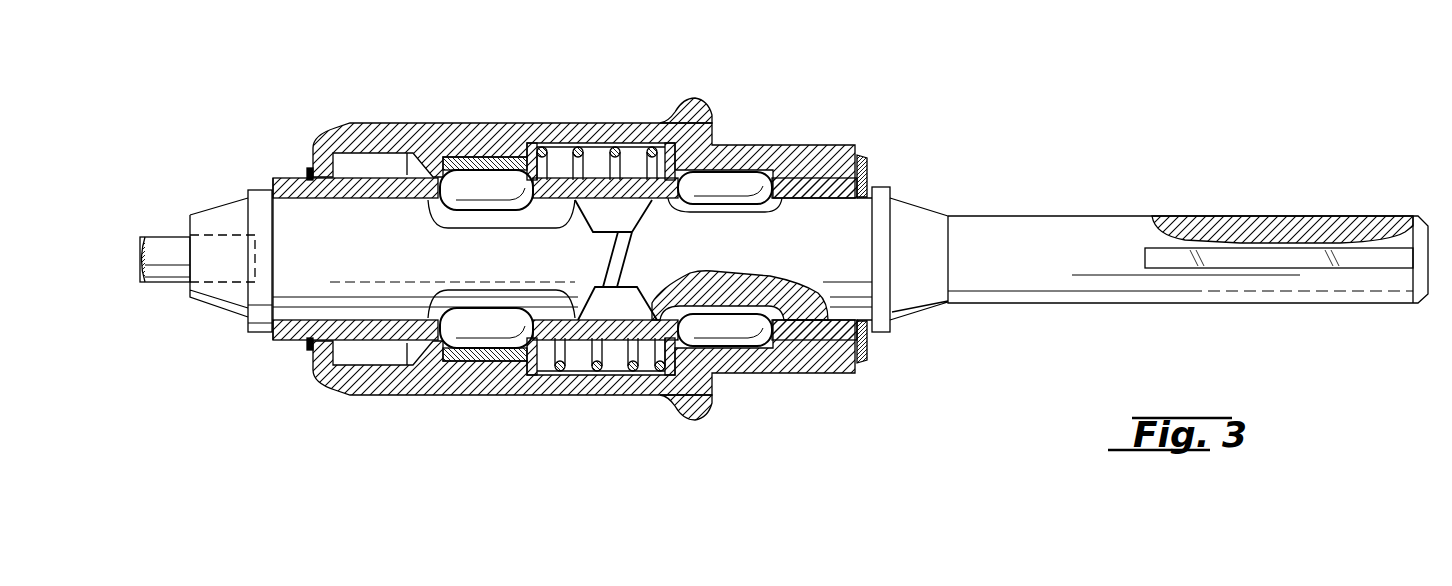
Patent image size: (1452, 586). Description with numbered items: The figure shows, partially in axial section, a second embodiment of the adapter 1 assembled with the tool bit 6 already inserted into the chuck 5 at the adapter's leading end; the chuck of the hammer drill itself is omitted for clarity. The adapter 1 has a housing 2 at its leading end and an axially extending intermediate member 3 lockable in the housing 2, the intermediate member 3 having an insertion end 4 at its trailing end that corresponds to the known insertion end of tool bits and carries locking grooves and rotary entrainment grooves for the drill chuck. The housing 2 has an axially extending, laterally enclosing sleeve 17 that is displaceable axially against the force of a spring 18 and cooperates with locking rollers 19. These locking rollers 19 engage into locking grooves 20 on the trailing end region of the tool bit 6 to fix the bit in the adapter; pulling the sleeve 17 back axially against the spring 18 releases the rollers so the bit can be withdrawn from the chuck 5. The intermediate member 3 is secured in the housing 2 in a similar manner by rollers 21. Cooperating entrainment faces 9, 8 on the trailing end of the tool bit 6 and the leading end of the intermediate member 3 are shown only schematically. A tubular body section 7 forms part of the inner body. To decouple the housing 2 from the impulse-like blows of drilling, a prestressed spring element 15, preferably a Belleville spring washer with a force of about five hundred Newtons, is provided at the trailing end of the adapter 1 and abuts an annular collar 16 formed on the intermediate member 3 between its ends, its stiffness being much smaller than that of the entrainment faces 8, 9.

The adapter 1 is at (952, 84).
The housing 2 is at (708, 102).
The intermediate member 3 is at (1052, 290).
The insertion end 4 is at (1410, 215).
The chuck 5 is at (298, 217).
The tool bit 6 is at (160, 247).
The tubular body section 7 is at (362, 208).
The entrainment face 8 is at (627, 259).
The entrainment face 9 is at (603, 252).
The spring element 15 is at (870, 162).
The annular collar 16 is at (880, 232).
The sleeve 17 is at (424, 136).
The spring 18 is at (603, 362).
The locking rollers 19 is at (485, 188).
The locking grooves 20 is at (448, 308).
The rollers 21 is at (738, 186).